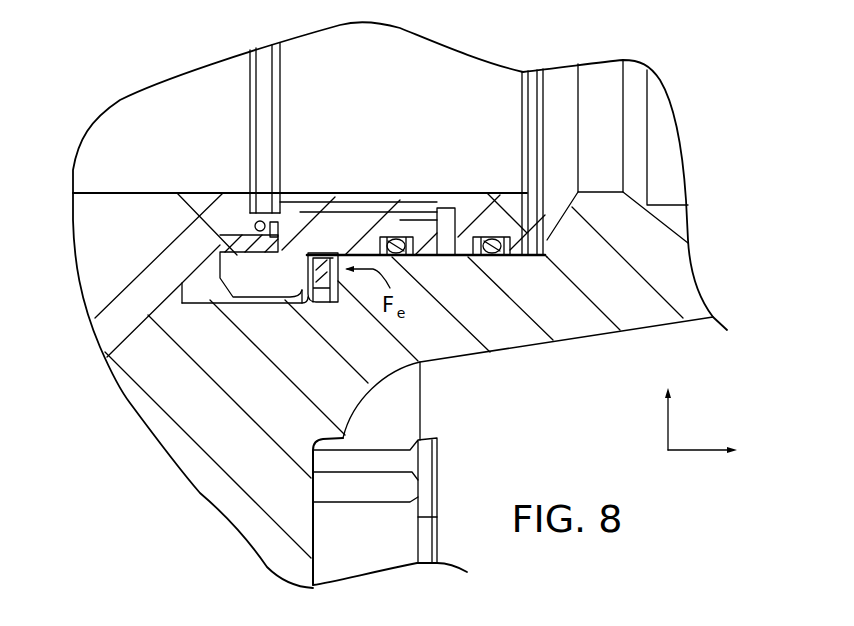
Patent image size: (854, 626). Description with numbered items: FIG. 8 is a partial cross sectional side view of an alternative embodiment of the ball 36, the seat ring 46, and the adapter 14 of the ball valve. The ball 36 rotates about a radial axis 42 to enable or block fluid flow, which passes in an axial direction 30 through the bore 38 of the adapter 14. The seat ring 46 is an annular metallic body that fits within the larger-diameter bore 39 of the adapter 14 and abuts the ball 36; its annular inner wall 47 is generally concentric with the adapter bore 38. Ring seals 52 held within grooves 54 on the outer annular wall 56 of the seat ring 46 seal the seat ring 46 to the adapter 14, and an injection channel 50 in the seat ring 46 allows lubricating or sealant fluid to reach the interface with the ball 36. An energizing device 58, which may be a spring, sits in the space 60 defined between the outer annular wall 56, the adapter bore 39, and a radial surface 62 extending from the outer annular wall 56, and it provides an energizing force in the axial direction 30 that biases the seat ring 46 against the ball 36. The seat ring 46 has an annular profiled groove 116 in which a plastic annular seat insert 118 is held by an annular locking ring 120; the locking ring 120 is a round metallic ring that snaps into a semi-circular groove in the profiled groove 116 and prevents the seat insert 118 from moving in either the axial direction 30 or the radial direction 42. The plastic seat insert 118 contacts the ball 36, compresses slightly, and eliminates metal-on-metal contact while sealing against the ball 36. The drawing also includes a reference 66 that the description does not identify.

The adapter 14 is at (514, 338).
The axial direction 30 is at (714, 456).
The ball 36 is at (88, 257).
The bore of the adapter 38 is at (610, 193).
The bore of the adapter 39 is at (437, 258).
The radial axis 42 is at (666, 416).
The seat ring 46 is at (527, 213).
The annular inner wall 47 is at (396, 196).
The injection channel 50 is at (352, 207).
The ring seal 52 is at (488, 237).
The groove 54 is at (392, 220).
The outer annular wall 56 is at (324, 237).
The energizing device 58 is at (303, 207).
The space 60 is at (318, 304).
The radial surface 62 is at (302, 272).
The gap 66 is at (200, 262).
The annular profiled groove 116 is at (230, 259).
The annular seat insert 118 is at (265, 240).
The annular locking ring 120 is at (256, 221).